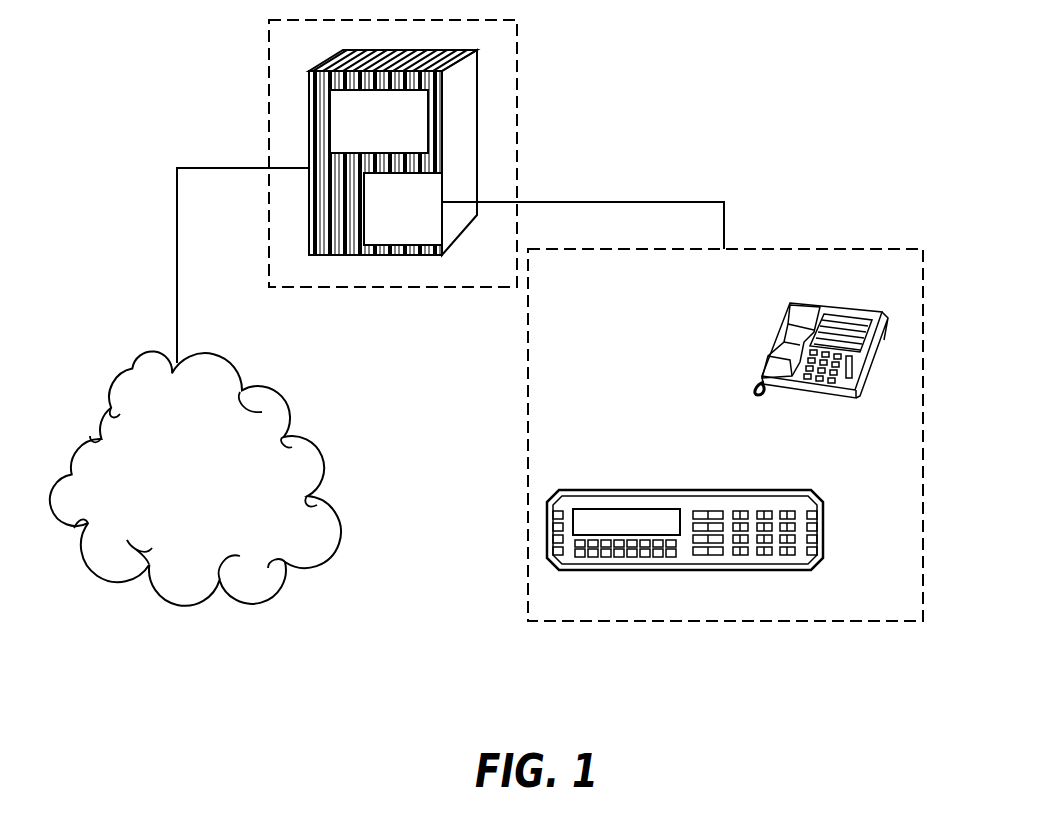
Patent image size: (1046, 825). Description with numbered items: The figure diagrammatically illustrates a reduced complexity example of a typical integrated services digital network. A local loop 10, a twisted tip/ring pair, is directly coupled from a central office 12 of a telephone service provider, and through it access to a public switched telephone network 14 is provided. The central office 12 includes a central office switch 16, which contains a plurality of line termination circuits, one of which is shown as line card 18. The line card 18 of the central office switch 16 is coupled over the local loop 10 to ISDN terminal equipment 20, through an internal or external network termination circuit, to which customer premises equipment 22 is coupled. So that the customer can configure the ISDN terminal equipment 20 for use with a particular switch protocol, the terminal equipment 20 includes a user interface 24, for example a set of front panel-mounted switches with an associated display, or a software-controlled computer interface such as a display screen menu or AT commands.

The local loop 10 is at (600, 202).
The central office 12 is at (522, 31).
The public switched telephone network 14 is at (315, 580).
The central office switch 16 is at (300, 115).
The line card 18 is at (383, 262).
The ISDN terminal equipment 20 is at (848, 240).
The customer premises equipment 22 is at (570, 582).
The user interface 24 is at (577, 500).